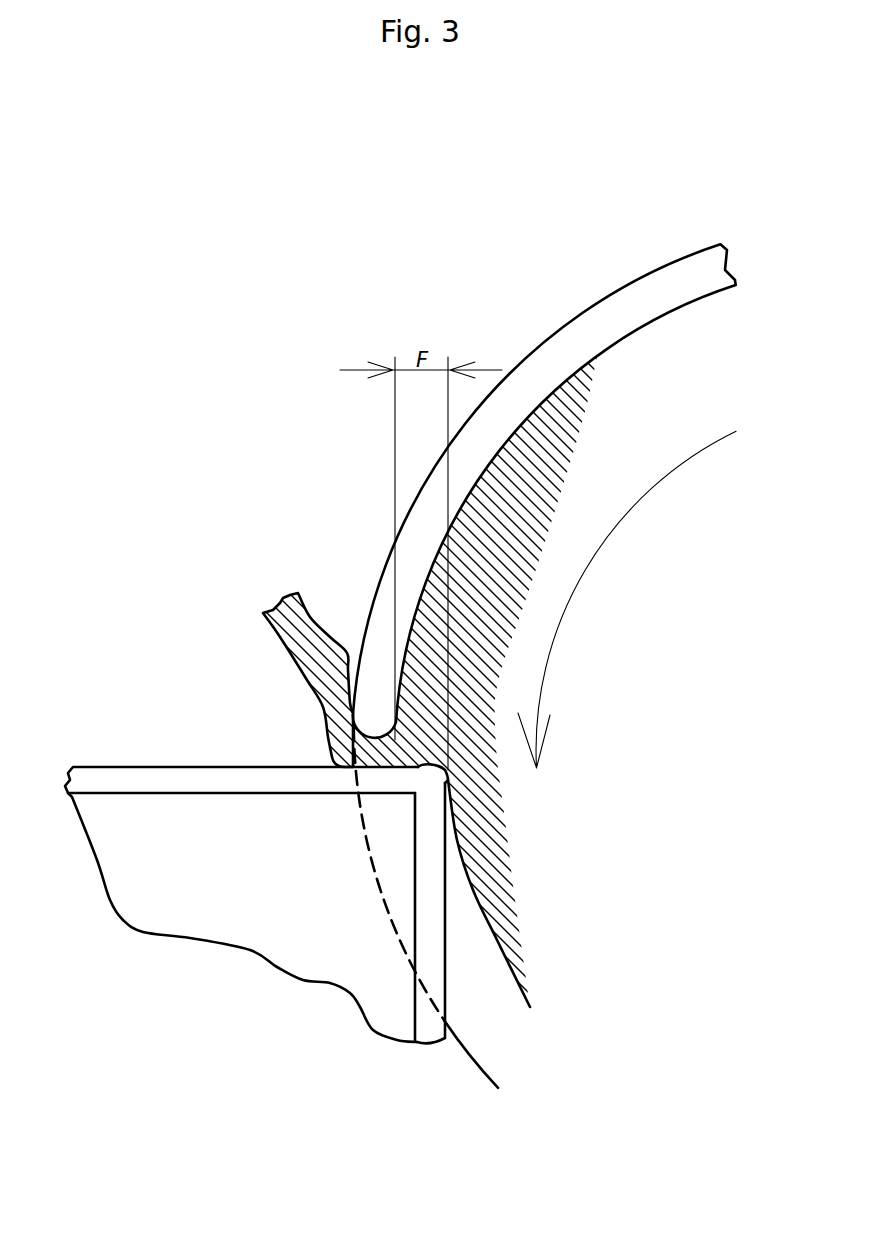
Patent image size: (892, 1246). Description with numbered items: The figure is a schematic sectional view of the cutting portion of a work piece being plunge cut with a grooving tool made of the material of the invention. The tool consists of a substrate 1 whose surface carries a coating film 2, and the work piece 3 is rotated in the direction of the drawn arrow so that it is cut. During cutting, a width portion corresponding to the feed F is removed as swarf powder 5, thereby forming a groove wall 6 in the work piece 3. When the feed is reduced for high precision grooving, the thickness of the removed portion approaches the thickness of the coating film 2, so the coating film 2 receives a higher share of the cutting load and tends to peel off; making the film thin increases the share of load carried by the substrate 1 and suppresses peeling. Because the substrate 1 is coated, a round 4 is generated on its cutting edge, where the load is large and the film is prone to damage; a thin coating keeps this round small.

The substrate 1 is at (147, 897).
The coating film 2 is at (432, 828).
The work piece 3 is at (677, 370).
The round 4 is at (430, 768).
The swarf powder 5 is at (317, 658).
The groove wall 6 is at (660, 290).